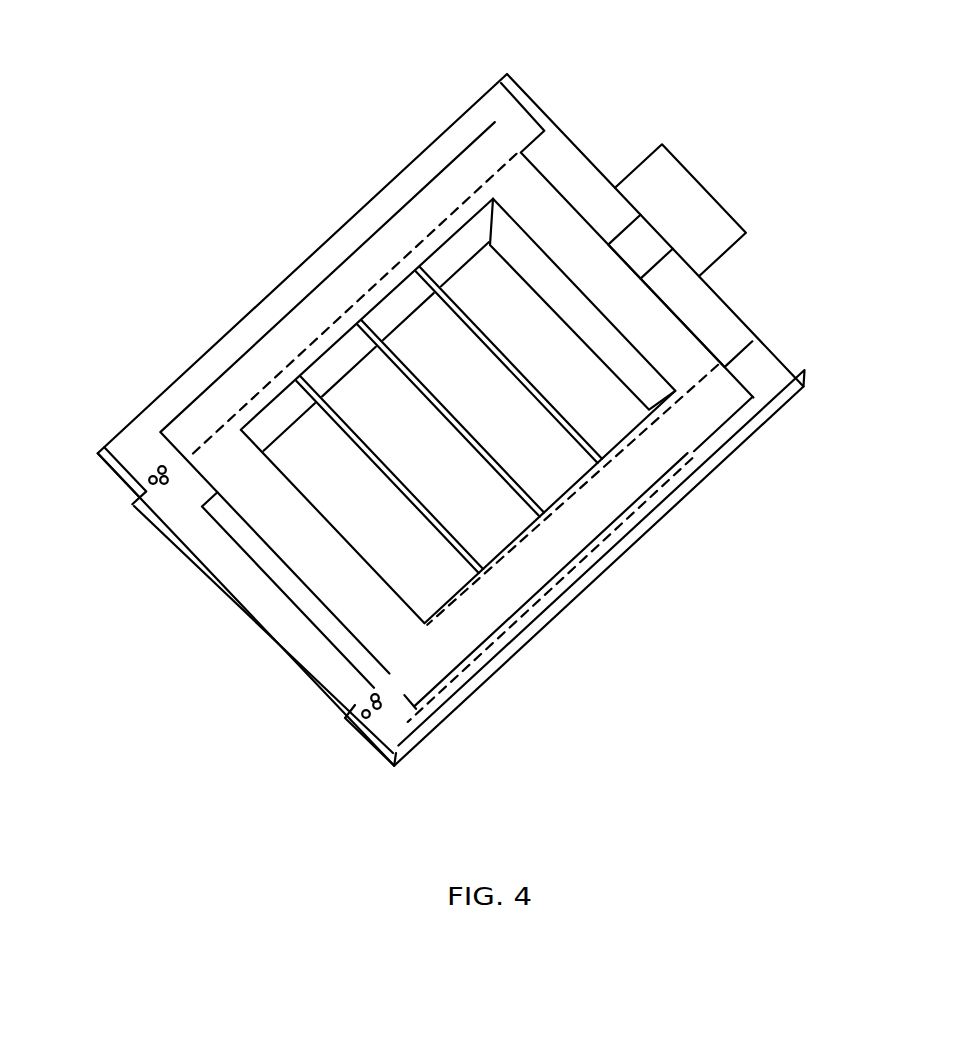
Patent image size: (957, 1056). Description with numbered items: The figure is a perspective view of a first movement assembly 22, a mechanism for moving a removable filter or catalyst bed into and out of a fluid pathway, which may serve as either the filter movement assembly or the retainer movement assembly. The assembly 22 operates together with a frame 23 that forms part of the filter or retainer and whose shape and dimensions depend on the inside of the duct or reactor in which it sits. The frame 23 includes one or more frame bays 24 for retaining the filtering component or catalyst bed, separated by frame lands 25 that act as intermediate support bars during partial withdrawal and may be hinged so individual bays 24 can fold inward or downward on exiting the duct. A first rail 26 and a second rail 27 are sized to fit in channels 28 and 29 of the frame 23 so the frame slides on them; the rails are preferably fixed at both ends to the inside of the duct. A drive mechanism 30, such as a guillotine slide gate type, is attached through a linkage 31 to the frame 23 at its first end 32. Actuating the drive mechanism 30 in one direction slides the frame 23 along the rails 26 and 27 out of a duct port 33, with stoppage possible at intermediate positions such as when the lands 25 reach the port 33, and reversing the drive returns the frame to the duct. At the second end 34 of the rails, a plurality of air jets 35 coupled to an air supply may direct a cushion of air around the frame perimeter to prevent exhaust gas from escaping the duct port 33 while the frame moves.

The first movement assembly 22 is at (485, 75).
The frame 23 is at (555, 165).
The frame bay 24 is at (458, 519).
The frame land 25 is at (513, 477).
The first rail 26 is at (493, 121).
The second rail 27 is at (763, 388).
The channel 28 is at (197, 426).
The channel 29 is at (405, 703).
The drive mechanism 30 is at (740, 192).
The linkage 31 is at (652, 272).
The first end 32 is at (653, 318).
The duct port 33 is at (327, 710).
The second end 34 is at (150, 517).
The air jets 35 is at (158, 468).